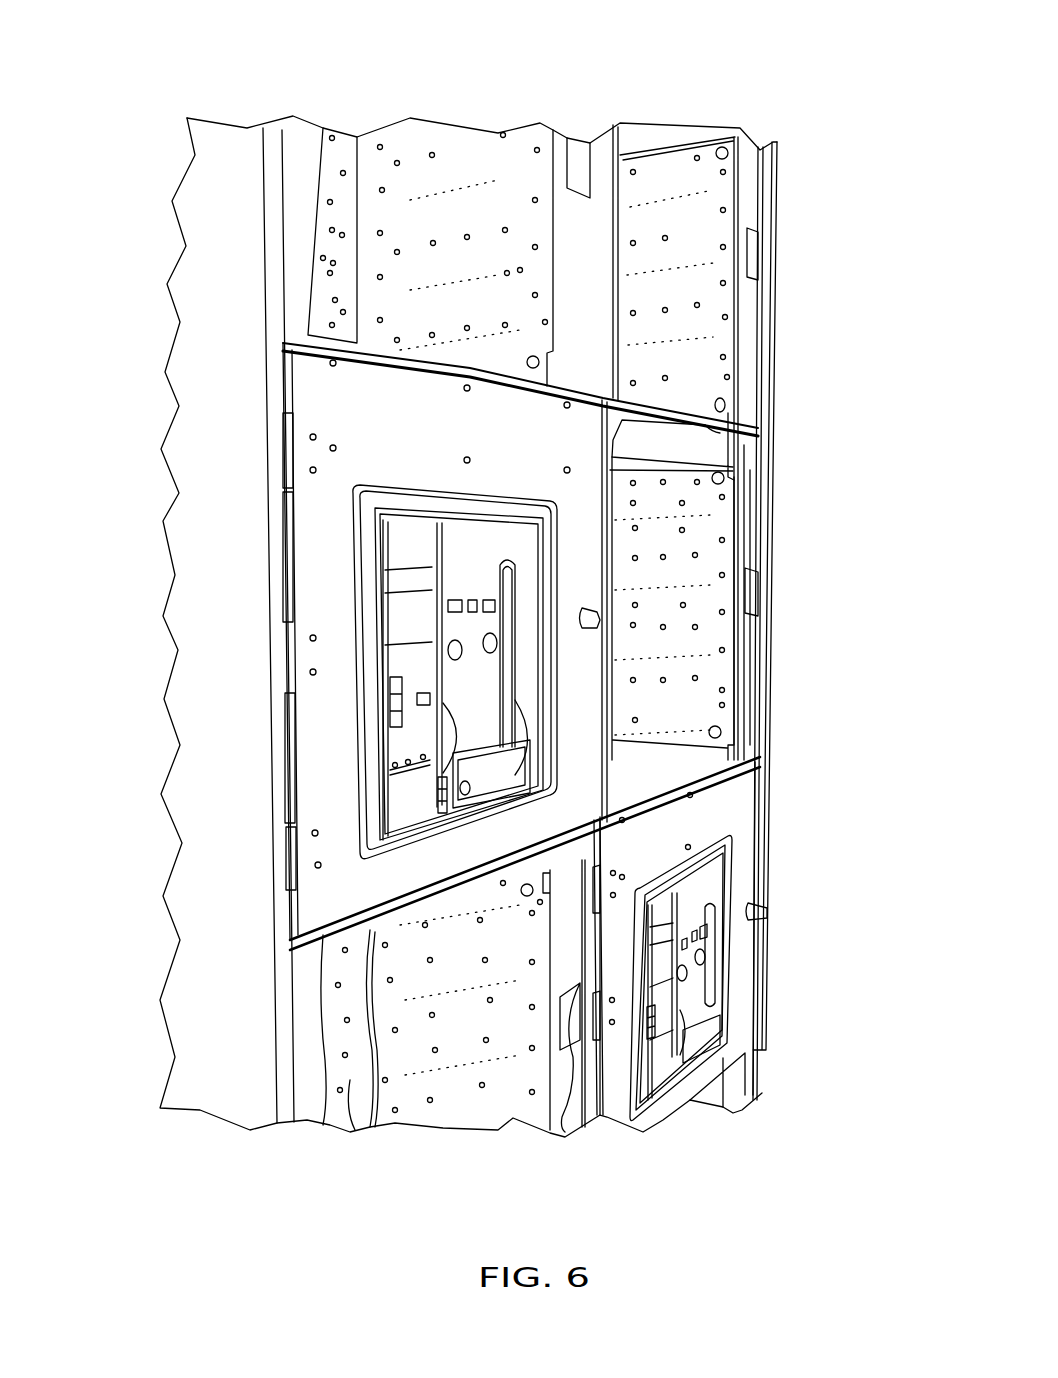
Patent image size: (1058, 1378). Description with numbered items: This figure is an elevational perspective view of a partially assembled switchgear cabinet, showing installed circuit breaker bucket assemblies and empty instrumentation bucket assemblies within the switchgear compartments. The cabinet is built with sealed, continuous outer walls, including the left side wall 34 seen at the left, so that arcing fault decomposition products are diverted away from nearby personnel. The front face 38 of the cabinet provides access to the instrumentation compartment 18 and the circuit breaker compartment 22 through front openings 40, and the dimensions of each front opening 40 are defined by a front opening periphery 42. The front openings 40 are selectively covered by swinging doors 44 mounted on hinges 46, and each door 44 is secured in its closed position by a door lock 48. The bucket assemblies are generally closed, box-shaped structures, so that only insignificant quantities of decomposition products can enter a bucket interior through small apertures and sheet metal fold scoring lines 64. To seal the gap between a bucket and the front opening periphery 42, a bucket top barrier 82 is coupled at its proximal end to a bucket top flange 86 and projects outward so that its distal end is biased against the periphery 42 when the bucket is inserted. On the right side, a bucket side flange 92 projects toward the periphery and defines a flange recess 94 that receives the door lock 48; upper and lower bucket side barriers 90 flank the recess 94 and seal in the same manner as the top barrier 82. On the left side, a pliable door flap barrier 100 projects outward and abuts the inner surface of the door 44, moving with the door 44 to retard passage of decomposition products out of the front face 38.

The instrumentation compartment 18 is at (676, 567).
The circuit breaker compartment 22 is at (735, 820).
The left side wall 34 is at (236, 312).
The front face 38 is at (636, 58).
The front opening 40 is at (744, 700).
The front opening periphery 42 is at (775, 428).
The swinging door 44 is at (533, 450).
The hinge 46 is at (288, 448).
The door lock 48 is at (592, 636).
The sheet metal fold scoring lines 64 is at (458, 187).
The bucket top barrier 82 is at (640, 423).
The bucket top flange 86 is at (653, 438).
The bucket side barrier 90 is at (758, 470).
The bucket side flange 92 is at (748, 507).
The flange recess 94 is at (562, 1130).
The door flap barrier 100 is at (302, 150).